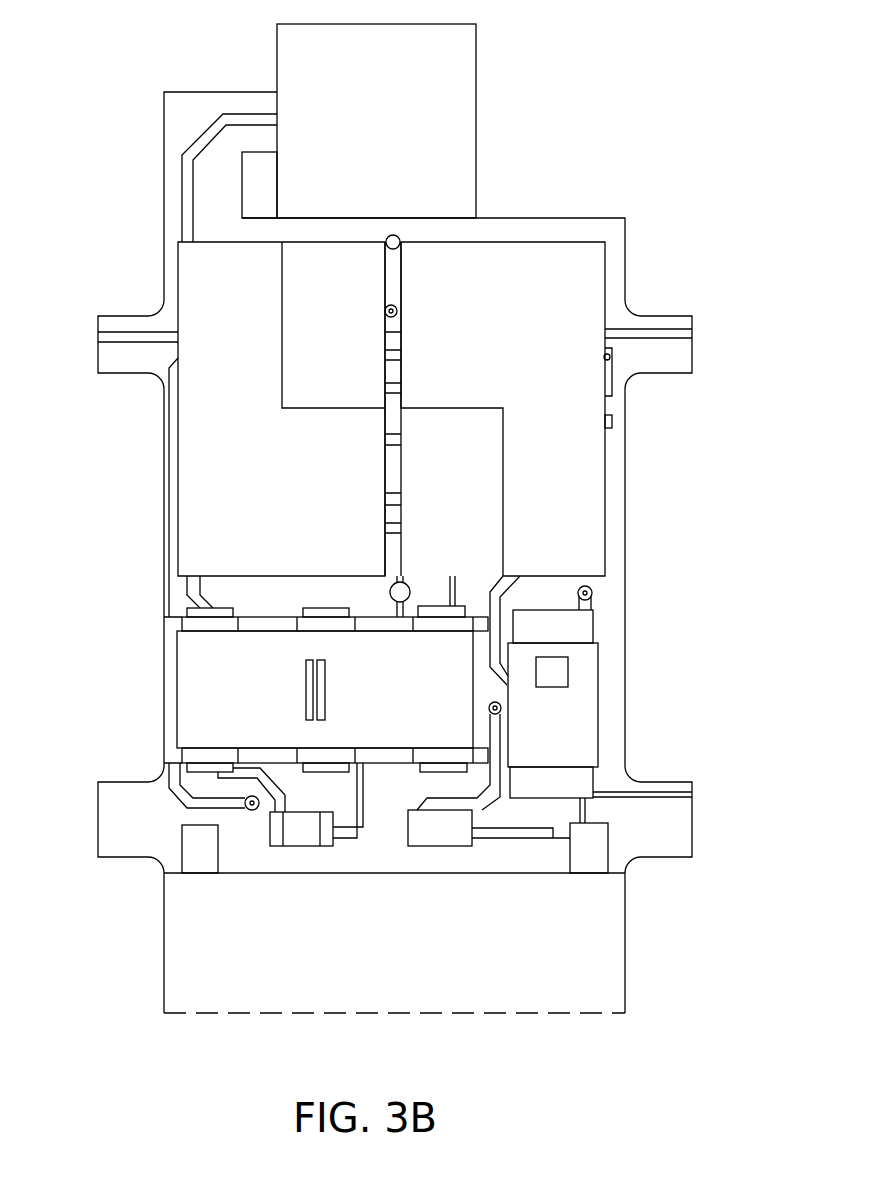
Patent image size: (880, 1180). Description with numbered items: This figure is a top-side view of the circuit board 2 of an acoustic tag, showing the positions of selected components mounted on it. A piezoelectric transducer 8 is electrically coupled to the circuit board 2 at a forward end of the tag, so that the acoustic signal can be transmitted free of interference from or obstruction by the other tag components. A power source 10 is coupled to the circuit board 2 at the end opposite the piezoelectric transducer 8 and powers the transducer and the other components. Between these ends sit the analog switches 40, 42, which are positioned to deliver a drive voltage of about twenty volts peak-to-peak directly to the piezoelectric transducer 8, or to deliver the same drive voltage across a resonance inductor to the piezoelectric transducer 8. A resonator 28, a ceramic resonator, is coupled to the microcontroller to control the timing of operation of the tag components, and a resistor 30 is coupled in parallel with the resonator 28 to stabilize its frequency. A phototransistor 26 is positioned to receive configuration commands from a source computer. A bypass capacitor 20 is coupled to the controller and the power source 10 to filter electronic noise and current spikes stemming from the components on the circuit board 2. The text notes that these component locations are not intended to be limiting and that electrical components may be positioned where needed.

The circuit board 2 is at (538, 218).
The piezoelectric transducer 8 is at (367, 127).
The power source 10 is at (374, 965).
The bypass capacitor 20 is at (460, 847).
The phototransistor 26 is at (536, 735).
The resonator 28 is at (374, 705).
The resistor 30 is at (270, 832).
The analog switch 40 is at (267, 487).
The analog switch 42 is at (487, 340).